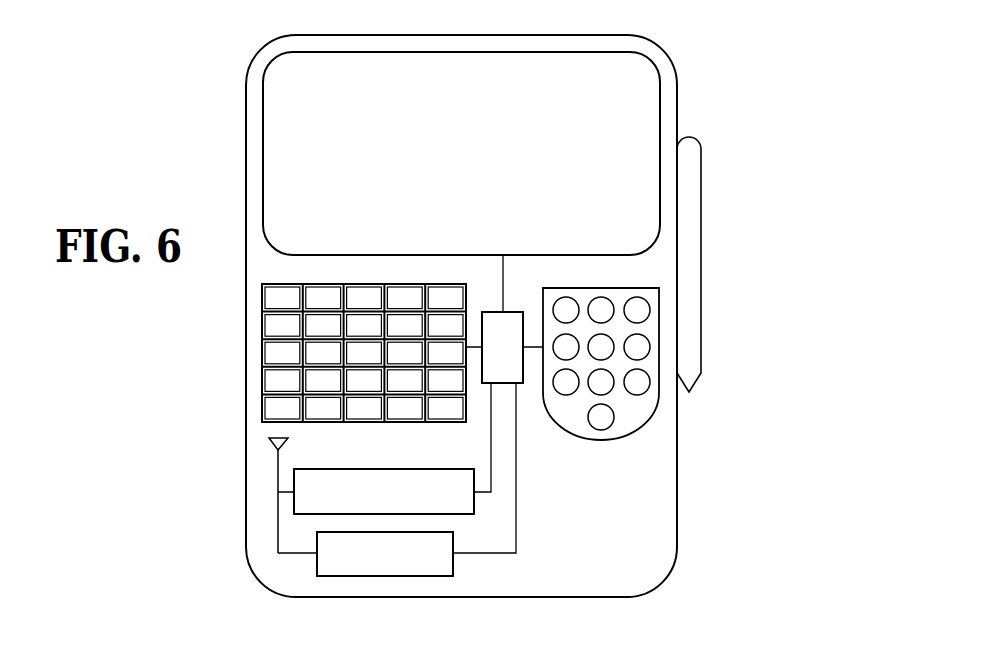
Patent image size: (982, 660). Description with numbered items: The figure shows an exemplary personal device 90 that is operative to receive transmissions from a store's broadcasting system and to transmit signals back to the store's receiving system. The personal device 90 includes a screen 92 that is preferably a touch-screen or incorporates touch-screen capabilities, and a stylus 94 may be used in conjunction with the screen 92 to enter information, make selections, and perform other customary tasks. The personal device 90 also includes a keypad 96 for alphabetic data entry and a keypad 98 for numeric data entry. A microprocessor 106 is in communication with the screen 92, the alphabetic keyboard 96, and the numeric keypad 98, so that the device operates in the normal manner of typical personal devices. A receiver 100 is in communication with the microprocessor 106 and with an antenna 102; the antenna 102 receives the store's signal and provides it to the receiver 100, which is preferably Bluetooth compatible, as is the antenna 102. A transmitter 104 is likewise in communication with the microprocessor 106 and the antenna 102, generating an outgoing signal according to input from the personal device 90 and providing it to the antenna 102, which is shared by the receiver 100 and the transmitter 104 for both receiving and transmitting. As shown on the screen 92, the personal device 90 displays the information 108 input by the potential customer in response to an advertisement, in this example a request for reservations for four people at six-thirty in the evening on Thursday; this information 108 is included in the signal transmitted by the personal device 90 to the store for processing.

The personal device 90 is at (780, 94).
The screen 92 is at (263, 160).
The stylus 94 is at (688, 259).
The keypad for alphabetic data entry 96 is at (262, 352).
The keypad for numeric data entry 98 is at (633, 413).
The receiver 100 is at (392, 576).
The antenna 102 is at (268, 440).
The transmitter 104 is at (373, 469).
The microprocessor 106 is at (517, 312).
The information/data 108 is at (640, 88).